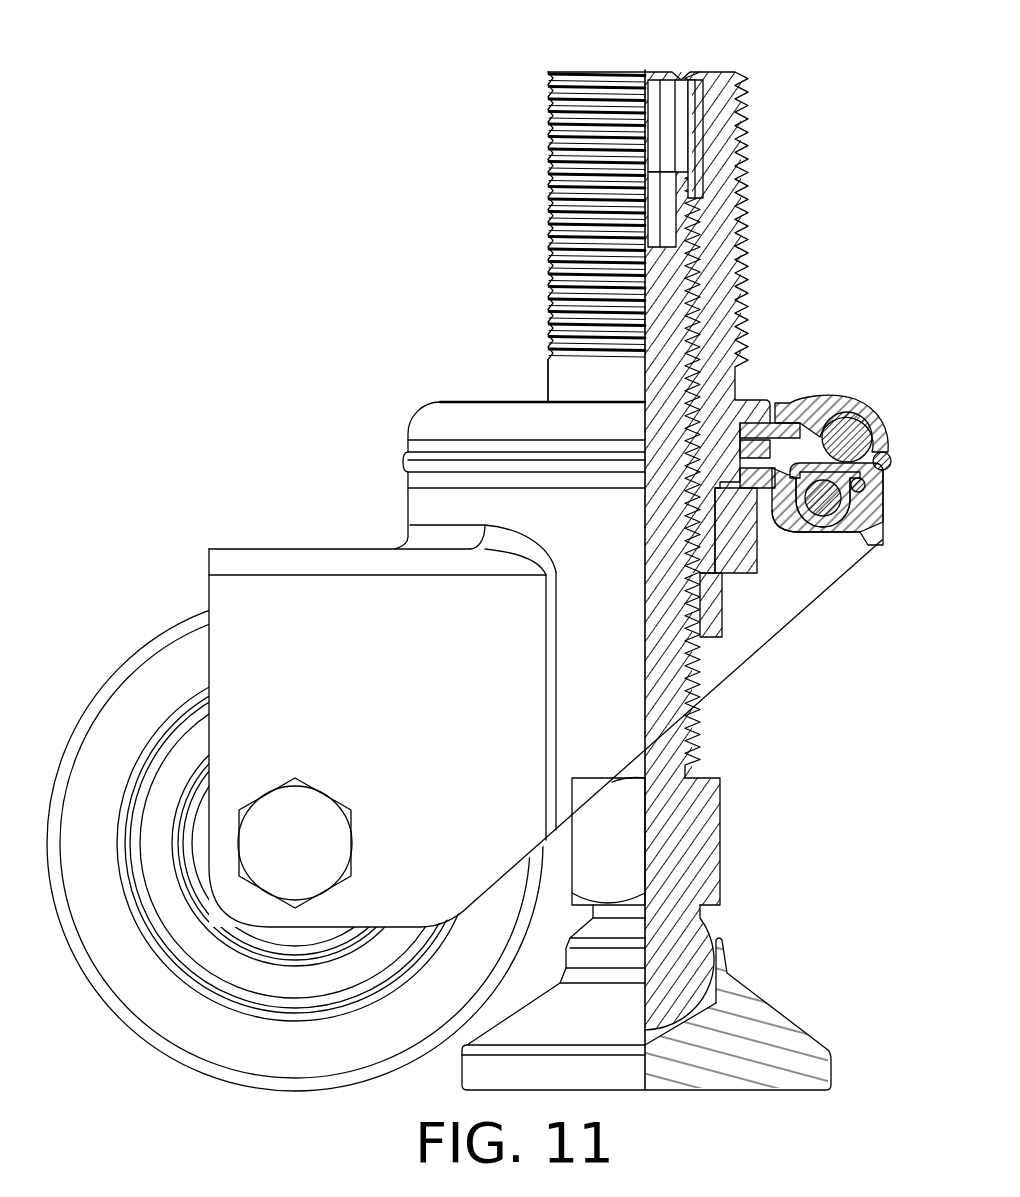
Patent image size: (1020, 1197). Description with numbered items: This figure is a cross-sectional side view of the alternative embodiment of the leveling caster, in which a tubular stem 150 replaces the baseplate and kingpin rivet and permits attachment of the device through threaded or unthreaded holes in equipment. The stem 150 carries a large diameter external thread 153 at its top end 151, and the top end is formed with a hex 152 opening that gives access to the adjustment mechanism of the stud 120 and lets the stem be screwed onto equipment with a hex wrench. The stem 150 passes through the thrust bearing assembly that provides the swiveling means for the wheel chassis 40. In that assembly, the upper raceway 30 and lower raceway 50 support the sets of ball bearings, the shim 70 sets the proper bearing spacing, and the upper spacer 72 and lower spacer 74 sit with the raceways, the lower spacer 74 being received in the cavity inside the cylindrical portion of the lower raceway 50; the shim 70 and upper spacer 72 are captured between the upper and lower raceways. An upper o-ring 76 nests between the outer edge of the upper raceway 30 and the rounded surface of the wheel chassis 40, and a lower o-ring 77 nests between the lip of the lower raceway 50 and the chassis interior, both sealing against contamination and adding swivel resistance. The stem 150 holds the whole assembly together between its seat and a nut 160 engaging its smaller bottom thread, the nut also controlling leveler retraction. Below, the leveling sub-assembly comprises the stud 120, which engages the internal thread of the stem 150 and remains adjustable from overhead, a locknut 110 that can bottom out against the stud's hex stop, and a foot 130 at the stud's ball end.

The stem 150 is at (750, 154).
The top end 151 is at (670, 77).
The hex 152 is at (667, 103).
The large diameter external thread 153 is at (738, 258).
The upper raceway 30 is at (875, 398).
The upper o-ring 76 is at (892, 456).
The wheel chassis 40 is at (890, 487).
The lower o-ring 77 is at (884, 519).
The shim 70 is at (866, 532).
The upper spacer 72 is at (848, 524).
The lower raceway 50 is at (836, 536).
The lower spacer 74 is at (798, 529).
The nut 160 is at (762, 575).
The locknut 110 is at (726, 621).
The stud 120 is at (732, 825).
The foot 130 is at (785, 996).